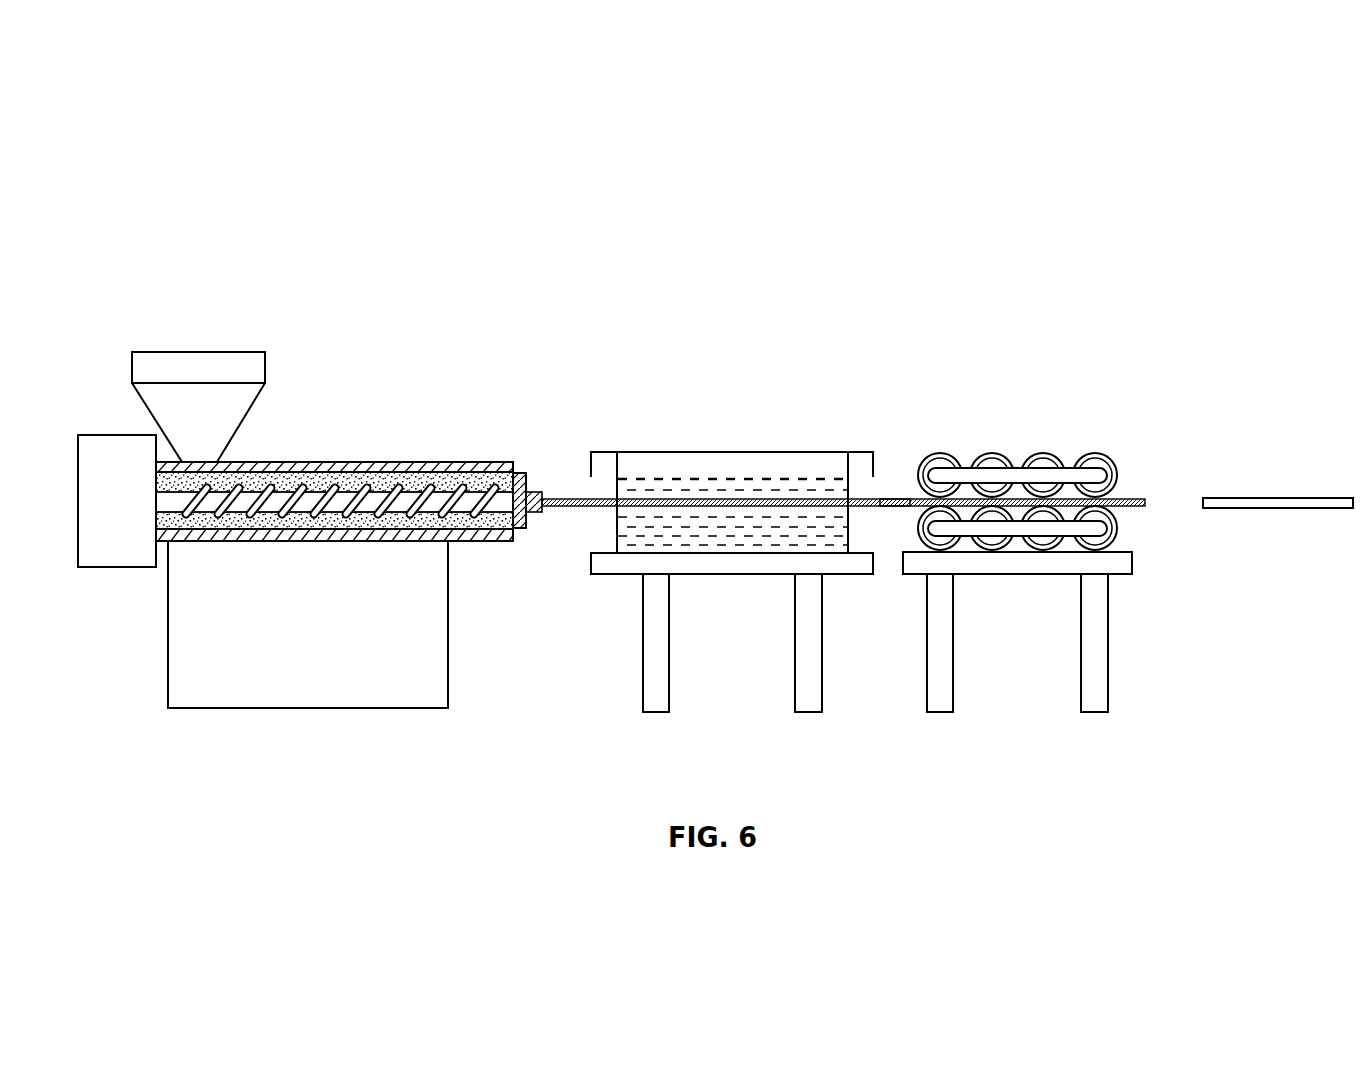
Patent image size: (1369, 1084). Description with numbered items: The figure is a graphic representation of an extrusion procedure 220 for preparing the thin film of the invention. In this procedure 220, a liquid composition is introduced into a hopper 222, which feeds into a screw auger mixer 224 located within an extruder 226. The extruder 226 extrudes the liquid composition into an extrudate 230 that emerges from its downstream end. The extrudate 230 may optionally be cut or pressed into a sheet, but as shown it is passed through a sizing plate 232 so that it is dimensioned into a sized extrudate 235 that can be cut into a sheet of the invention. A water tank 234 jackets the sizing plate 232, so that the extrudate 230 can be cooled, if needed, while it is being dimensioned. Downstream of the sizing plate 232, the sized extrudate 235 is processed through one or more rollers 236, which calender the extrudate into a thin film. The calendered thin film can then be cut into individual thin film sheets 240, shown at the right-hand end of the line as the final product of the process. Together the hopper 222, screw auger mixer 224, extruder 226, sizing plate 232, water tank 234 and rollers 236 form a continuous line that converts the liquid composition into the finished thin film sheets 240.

The extrusion procedure 220 is at (198, 221).
The hopper 222 is at (258, 371).
The screw auger mixer 224 is at (366, 492).
The extruder 226 is at (448, 462).
The extrudate 230 is at (564, 499).
The sizing plate 232 is at (666, 452).
The water tank 234 is at (778, 492).
The sized extrudate 235 is at (897, 497).
The rollers 236 is at (1004, 455).
The thin film sheets 240 is at (1282, 492).